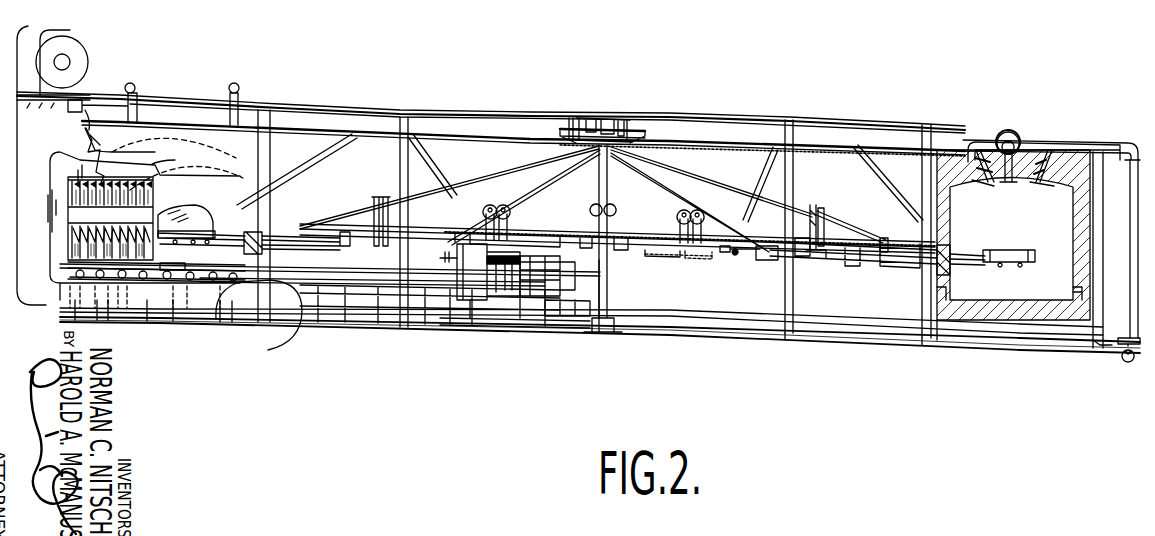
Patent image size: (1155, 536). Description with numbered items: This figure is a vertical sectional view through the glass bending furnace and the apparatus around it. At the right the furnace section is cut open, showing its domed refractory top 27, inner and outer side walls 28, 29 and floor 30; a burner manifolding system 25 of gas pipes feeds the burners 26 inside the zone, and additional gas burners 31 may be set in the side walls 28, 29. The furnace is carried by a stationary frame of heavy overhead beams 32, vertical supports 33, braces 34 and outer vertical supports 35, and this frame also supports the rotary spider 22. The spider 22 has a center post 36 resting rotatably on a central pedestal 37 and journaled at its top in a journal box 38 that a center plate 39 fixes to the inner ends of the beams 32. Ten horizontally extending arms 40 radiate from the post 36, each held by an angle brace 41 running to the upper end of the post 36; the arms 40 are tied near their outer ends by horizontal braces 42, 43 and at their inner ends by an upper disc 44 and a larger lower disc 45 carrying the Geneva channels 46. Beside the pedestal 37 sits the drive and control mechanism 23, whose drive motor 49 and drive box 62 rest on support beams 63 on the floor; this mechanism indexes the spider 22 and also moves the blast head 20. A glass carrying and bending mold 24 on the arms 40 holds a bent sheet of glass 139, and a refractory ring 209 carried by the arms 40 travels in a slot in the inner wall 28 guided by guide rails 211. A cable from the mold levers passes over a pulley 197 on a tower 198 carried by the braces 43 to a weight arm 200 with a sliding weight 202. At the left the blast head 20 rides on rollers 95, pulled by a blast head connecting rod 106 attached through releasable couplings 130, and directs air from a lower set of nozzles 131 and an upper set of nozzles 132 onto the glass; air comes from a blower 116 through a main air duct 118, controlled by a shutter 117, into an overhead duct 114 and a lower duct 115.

The blast head 20 is at (64, 242).
The rotary spider 22 is at (676, 157).
The drive and control mechanism 23 is at (458, 249).
The glass carrying and bending mold 24 is at (205, 237).
The burner manifolding system 25 is at (1076, 132).
The burners 26 is at (1043, 180).
The domed refractory top 27 is at (961, 136).
The inner side wall 28 is at (952, 235).
The outer side wall 29 is at (1072, 233).
The floor 30 is at (989, 299).
The additional gas burners 31 is at (950, 292).
The overhead beams 32 is at (432, 108).
The vertical supports 33 is at (398, 162).
The braces 34 is at (440, 164).
The outer vertical supports 35 is at (1110, 334).
The center post 36 is at (608, 192).
The central pedestal 37 is at (608, 299).
The journal box 38 is at (602, 115).
The center plate 39 is at (566, 118).
The horizontally extending arms 40 is at (521, 234).
The angle brace 41 is at (530, 167).
The horizontal braces 42 is at (886, 243).
The horizontal braces 43 is at (844, 229).
The upper disc 44 is at (616, 237).
The lower disc 45 is at (637, 255).
The Geneva channels 46 is at (694, 259).
The drive motor 49 is at (460, 281).
The drive box 62 is at (566, 290).
The support beams 63 is at (487, 317).
The rollers 95 is at (270, 347).
The blast head connecting rod 106 is at (340, 265).
The overhead duct 114 is at (102, 90).
The lower duct 115 is at (135, 305).
The blower 116 is at (88, 53).
The shutter 117 is at (28, 161).
The main air duct 118 is at (46, 36).
The releasable couplings 130 is at (162, 263).
The lower set of nozzles 131 is at (112, 233).
The upper set of nozzles 132 is at (146, 206).
The bent sheet of glass 139 is at (204, 207).
The pulley 197 is at (506, 206).
The tower 198 is at (490, 217).
The weight arm 200 is at (732, 253).
The weight 202 is at (768, 261).
The refractory ring 209 is at (972, 274).
The guide rails 211 is at (270, 229).